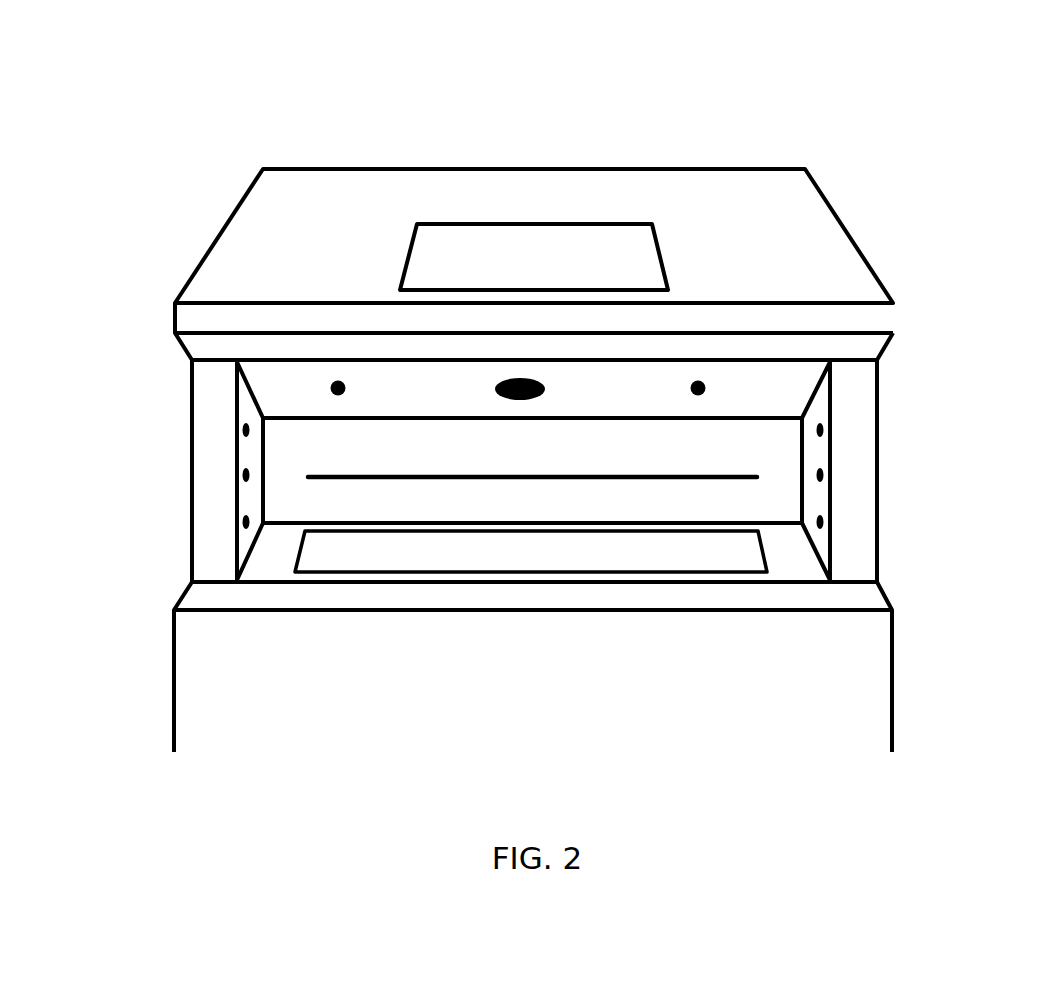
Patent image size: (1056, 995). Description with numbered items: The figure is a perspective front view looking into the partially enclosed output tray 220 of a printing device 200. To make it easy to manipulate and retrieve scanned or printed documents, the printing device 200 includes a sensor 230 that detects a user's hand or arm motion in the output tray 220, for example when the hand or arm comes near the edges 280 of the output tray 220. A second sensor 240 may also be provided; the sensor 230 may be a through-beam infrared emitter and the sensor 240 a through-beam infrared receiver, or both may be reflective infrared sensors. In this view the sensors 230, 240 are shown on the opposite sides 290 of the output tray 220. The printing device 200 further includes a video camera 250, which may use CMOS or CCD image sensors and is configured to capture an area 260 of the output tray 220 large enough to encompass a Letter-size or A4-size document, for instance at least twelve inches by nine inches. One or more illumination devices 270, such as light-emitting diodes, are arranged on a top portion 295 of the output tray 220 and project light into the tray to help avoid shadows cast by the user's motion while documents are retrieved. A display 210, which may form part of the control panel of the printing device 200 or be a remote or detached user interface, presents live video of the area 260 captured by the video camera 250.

The printing device 200 is at (403, 143).
The display 210 is at (548, 250).
The output tray 220 is at (435, 498).
The sensor 230 is at (833, 427).
The sensor 240 is at (235, 432).
The video camera 250 is at (545, 386).
The area 260 is at (565, 548).
The illumination devices 270 is at (340, 380).
The edges 280 is at (760, 357).
The sides 290 is at (275, 447).
The top portion 295 is at (424, 395).